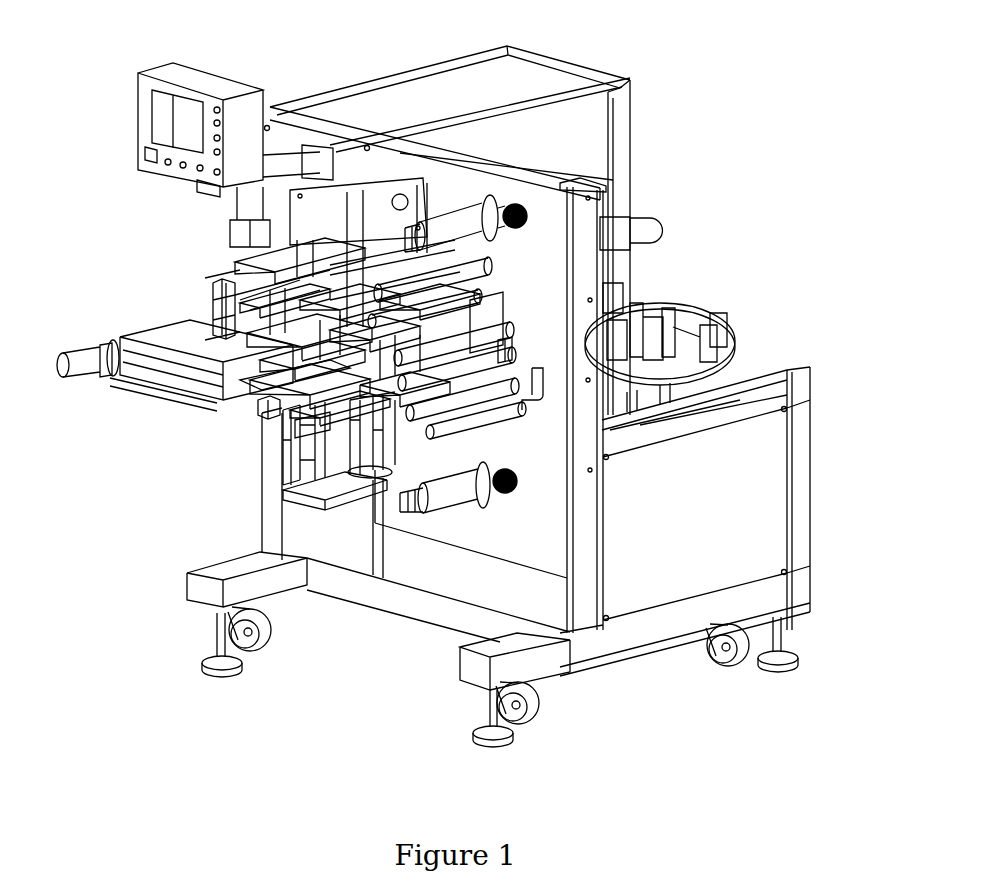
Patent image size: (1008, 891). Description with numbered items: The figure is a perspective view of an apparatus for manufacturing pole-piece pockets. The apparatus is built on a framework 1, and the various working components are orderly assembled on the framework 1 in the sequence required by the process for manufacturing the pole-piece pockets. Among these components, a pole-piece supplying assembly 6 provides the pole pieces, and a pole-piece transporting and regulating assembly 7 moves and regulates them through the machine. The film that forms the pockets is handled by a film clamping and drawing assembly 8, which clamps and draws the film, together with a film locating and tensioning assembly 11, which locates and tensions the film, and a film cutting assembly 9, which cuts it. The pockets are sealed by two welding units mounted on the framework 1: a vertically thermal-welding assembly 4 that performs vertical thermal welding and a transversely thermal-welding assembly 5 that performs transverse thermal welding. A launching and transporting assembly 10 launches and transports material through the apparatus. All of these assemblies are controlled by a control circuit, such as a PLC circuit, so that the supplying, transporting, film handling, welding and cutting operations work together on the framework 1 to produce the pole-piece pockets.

The framework 1 is at (615, 76).
The vertically thermal-welding assembly 4 is at (373, 484).
The transversely thermal-welding assembly 5 is at (280, 455).
The pole-piece supplying assembly 6 is at (707, 343).
The pole-piece transporting and regulating assembly 7 is at (507, 348).
The film clamping and drawing assembly 8 is at (213, 302).
The film cutting assembly 9 is at (265, 410).
The launching and transporting assembly 10 is at (180, 340).
The film locating and tensioning assembly 11 is at (486, 226).